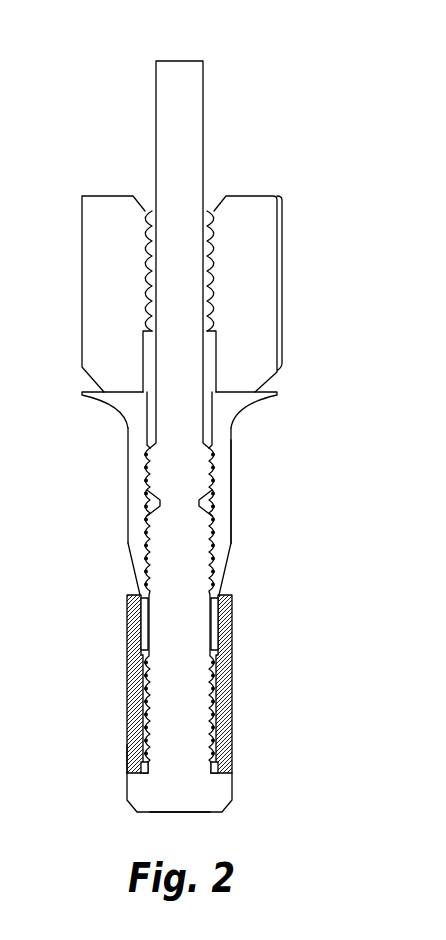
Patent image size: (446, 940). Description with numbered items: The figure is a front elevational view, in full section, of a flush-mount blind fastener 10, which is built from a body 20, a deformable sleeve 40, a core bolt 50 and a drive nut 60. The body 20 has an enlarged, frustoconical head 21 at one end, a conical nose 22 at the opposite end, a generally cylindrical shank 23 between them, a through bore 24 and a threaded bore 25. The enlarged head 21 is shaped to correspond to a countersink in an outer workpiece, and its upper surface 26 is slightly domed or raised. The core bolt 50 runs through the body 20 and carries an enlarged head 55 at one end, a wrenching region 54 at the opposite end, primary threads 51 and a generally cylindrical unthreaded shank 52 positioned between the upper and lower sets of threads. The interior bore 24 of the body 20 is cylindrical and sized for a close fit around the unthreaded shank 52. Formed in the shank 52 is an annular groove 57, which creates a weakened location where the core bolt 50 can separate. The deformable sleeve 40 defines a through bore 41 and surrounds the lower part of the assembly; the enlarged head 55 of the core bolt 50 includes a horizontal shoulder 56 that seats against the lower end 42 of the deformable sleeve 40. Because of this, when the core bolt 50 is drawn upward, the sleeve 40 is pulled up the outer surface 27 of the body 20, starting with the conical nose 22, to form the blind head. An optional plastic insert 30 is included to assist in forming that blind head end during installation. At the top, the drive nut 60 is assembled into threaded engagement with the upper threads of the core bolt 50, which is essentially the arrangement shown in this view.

The blind fastener 10 is at (341, 418).
The body 20 is at (134, 430).
The enlarged head 21 is at (247, 400).
The conical nose 22 is at (135, 568).
The shank 23 is at (136, 472).
The through bore 24 is at (207, 390).
The threaded bore 25 is at (224, 565).
The upper surface 26 is at (134, 390).
The outer surface 27 is at (232, 505).
The plastic insert 30 is at (146, 620).
The deformable sleeve 40 is at (130, 685).
The through bore 41 is at (152, 706).
The lower end 42 is at (232, 765).
The core bolt 50 is at (210, 797).
The primary threads 51 is at (216, 720).
The shank 52 is at (193, 614).
The wrenching region 54 is at (185, 80).
The enlarged head 55 is at (157, 797).
The horizontal shoulder 56 is at (130, 760).
The annular groove 57 is at (150, 503).
The drive nut 60 is at (263, 225).